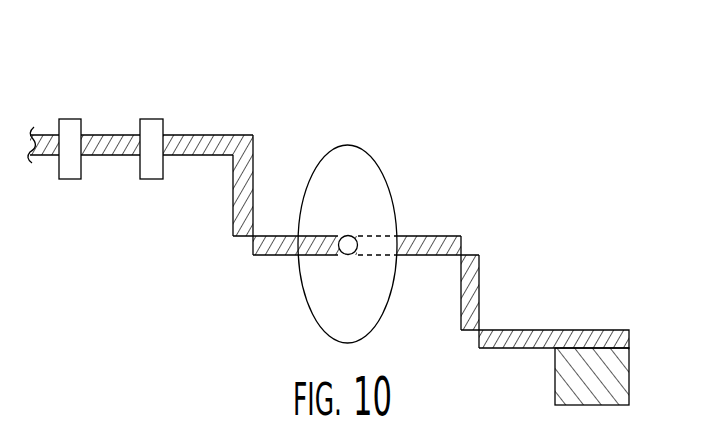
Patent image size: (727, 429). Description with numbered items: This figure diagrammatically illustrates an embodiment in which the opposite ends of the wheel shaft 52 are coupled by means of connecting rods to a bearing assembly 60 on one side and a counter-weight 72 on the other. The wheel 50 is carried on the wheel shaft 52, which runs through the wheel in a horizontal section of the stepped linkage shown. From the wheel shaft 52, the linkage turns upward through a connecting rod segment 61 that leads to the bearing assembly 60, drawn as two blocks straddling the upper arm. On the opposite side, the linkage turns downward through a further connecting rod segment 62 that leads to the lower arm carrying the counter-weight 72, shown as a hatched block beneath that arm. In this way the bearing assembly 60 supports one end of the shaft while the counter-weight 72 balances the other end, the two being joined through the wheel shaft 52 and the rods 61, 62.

The bearing assembly 60 is at (146, 119).
The first vertical segment 61 is at (255, 156).
The wheel shaft 52 is at (411, 236).
The wheel 50 is at (347, 145).
The second vertical segment 62 is at (480, 292).
The counter-weight 72 is at (629, 370).